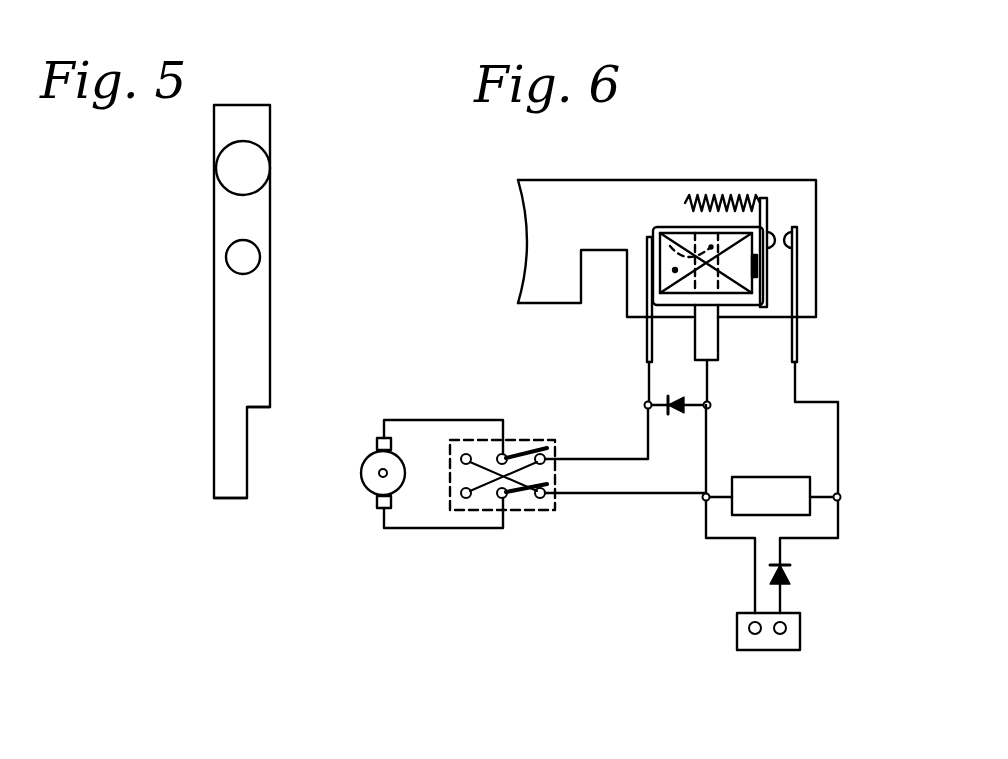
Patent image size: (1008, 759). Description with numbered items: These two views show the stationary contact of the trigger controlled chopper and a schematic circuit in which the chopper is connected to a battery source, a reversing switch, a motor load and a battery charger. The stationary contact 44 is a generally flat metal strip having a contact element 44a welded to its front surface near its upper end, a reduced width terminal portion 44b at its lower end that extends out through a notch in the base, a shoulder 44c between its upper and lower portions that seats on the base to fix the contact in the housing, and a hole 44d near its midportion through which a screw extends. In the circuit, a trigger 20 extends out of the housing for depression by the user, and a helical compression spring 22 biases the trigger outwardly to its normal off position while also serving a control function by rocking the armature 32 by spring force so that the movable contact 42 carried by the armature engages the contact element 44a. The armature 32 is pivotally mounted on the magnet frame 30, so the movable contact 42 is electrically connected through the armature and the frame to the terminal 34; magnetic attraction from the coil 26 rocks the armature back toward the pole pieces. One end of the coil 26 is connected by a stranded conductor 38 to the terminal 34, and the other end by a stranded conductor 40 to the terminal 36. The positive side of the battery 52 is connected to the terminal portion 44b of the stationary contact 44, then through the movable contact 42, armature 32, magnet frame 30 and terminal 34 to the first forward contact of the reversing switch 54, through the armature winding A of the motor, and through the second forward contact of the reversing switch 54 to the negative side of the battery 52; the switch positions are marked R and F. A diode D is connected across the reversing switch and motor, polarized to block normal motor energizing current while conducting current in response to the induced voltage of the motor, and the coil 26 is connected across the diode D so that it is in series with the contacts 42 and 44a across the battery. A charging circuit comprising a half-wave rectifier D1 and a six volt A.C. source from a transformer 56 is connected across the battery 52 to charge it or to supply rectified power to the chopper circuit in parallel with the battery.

In FIG. 6, the trigger 20 is at (535, 232).
In FIG. 6, the helical compression spring 22 is at (712, 198).
In FIG. 6, the coil 26 is at (740, 290).
In FIG. 6, the magnet frame 30 is at (655, 230).
In FIG. 6, the armature 32 is at (770, 268).
In FIG. 6, the terminal 34 is at (648, 347).
In FIG. 6, the terminal 36 is at (720, 352).
In FIG. 6, the stranded conductor 38 is at (675, 270).
In FIG. 6, the stranded conductor 40 is at (669, 235).
In FIG. 6, the movable contact 42 is at (768, 230).
In FIG. 5, the stationary contact 44 is at (270, 119).
In FIG. 6, the stationary contact 44 is at (799, 300).
In FIG. 5, the contact element 44a is at (265, 173).
In FIG. 6, the contact element 44a is at (786, 238).
In FIG. 5, the terminal portion 44b is at (216, 466).
In FIG. 6, the terminal portion 44b is at (799, 352).
In FIG. 5, the shoulder 44c is at (262, 412).
In FIG. 5, the hole 44d is at (258, 254).
In FIG. 6, the battery 52 is at (792, 478).
In FIG. 6, the reversing switch 54 is at (523, 511).
In FIG. 6, the transformer 56 is at (803, 626).
In FIG. 6, the armature winding A is at (367, 478).
In FIG. 6, the reverse position R is at (428, 440).
In FIG. 6, the forward position F is at (625, 449).
In FIG. 6, the diode D is at (676, 412).
In FIG. 6, the half-wave rectifier D1 is at (800, 570).